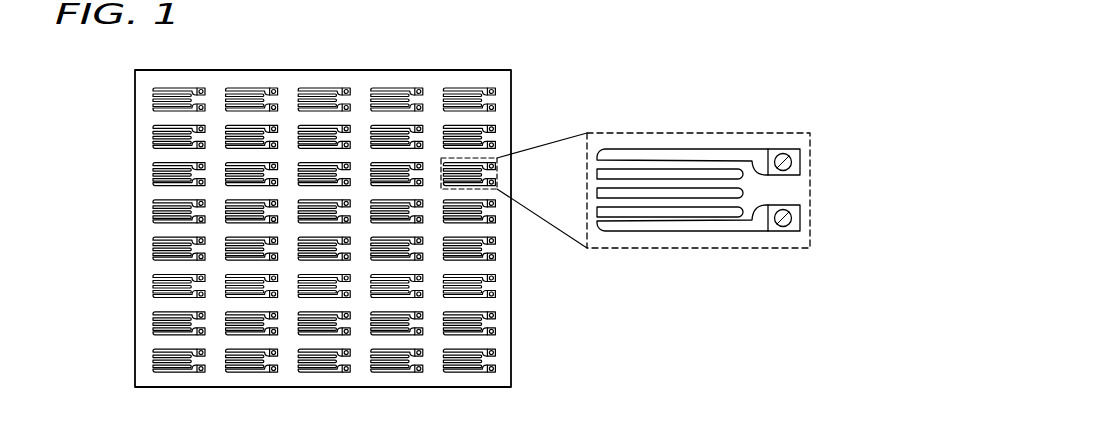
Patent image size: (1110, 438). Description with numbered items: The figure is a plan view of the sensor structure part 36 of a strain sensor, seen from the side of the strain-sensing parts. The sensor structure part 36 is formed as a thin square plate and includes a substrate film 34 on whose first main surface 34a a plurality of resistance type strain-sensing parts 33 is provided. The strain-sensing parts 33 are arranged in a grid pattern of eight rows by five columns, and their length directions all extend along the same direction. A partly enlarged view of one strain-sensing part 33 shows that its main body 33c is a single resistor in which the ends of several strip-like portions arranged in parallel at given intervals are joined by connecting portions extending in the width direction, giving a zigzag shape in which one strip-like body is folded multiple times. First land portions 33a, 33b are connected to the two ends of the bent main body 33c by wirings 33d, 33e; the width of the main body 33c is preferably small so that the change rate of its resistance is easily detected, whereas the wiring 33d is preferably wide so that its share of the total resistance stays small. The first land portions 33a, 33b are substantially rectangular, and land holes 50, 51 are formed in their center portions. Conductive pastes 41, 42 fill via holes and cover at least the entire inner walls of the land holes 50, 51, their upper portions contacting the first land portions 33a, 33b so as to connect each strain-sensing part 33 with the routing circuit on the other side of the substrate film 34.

The sensor structure part 36 is at (467, 67).
The substrate film 34 is at (324, 199).
The first main surface 34a is at (260, 80).
The resistance type strain-sensing part 33 is at (651, 241).
The first land portion 33a is at (803, 226).
The first land portion 33b is at (801, 155).
The main body 33c is at (648, 212).
The wiring 33d is at (690, 223).
The wiring 33e is at (682, 150).
The conductive paste 41 is at (787, 229).
The conductive paste 42 is at (789, 156).
The land hole 50 is at (790, 170).
The land hole 51 is at (778, 224).